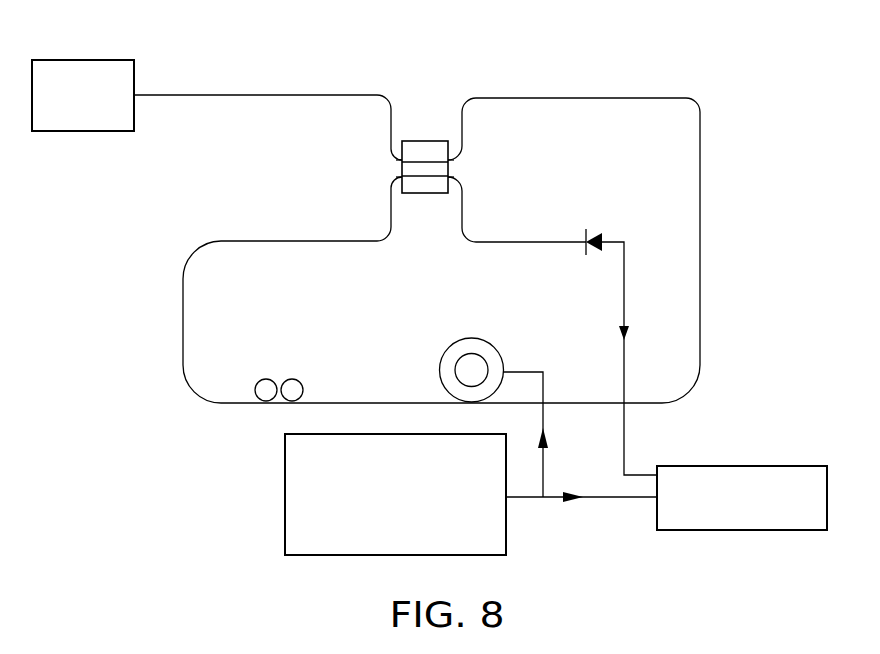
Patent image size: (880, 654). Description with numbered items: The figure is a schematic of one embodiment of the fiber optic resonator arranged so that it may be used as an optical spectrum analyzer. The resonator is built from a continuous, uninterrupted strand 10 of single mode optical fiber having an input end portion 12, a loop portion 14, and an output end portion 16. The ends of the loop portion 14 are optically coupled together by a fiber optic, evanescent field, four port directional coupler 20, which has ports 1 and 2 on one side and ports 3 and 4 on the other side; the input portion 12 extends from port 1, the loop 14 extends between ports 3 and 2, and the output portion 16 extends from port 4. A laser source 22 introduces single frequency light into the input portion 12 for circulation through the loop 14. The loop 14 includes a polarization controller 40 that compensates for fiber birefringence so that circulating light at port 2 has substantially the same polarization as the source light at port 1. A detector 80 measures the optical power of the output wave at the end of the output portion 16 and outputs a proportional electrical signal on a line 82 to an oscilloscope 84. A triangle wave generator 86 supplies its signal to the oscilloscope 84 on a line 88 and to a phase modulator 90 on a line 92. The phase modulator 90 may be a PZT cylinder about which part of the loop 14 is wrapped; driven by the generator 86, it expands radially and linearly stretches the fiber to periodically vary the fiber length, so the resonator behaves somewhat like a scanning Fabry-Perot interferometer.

The strand of single mode optical fiber 10 is at (605, 90).
The input end portion 12 is at (203, 94).
The loop portion 14 is at (183, 300).
The output end portion 16 is at (468, 244).
The directional coupler 20 is at (420, 141).
The laser source 22 is at (93, 59).
The port 1 is at (382, 152).
The port 2 is at (382, 184).
The port 3 is at (468, 152).
The port 4 is at (468, 184).
The polarization controller 40 is at (268, 402).
The detector 80 is at (591, 251).
The line 82 is at (625, 311).
The oscilloscope 84 is at (737, 466).
The triangle wave generator 86 is at (285, 480).
The line 88 is at (597, 498).
The phase modulator 90 is at (442, 362).
The line 92 is at (545, 455).